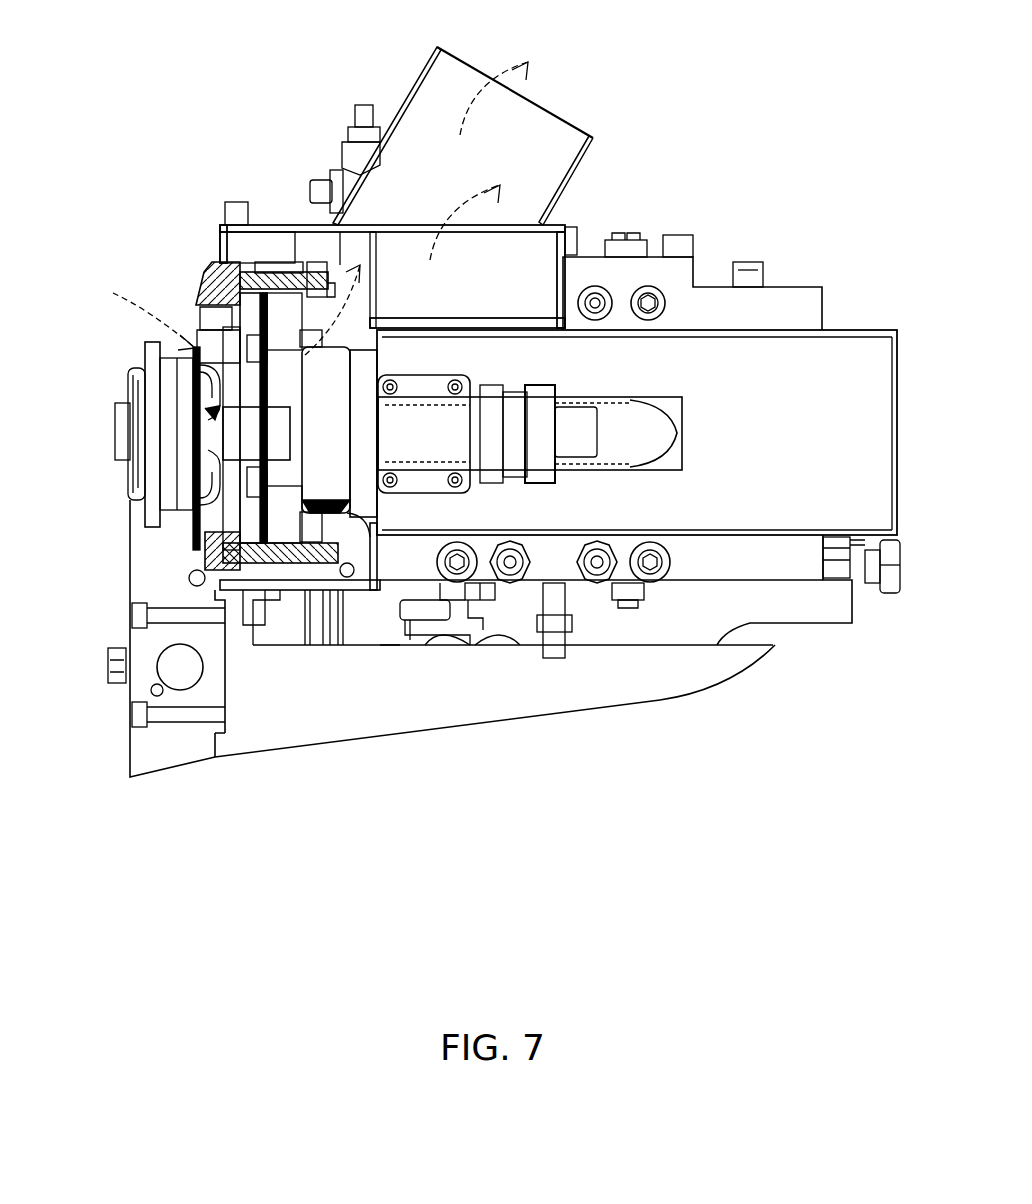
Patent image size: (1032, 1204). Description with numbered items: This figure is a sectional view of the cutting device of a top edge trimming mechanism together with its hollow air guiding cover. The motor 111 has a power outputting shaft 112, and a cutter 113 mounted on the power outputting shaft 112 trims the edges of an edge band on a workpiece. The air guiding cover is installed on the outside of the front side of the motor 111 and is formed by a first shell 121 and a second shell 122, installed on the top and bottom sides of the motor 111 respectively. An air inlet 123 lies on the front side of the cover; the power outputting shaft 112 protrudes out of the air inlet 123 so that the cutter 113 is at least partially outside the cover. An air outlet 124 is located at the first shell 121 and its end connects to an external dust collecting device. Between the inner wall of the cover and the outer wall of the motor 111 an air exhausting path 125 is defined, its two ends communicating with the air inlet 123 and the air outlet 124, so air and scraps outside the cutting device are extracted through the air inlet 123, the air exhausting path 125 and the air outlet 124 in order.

The motor 111 is at (855, 373).
The power outputting shaft 112 is at (263, 440).
The cutter 113 is at (197, 377).
The first shell 121 is at (405, 92).
The second shell 122 is at (233, 590).
The air inlet 123 is at (210, 300).
The air outlet 124 is at (577, 125).
The air exhausting path 125 is at (317, 245).